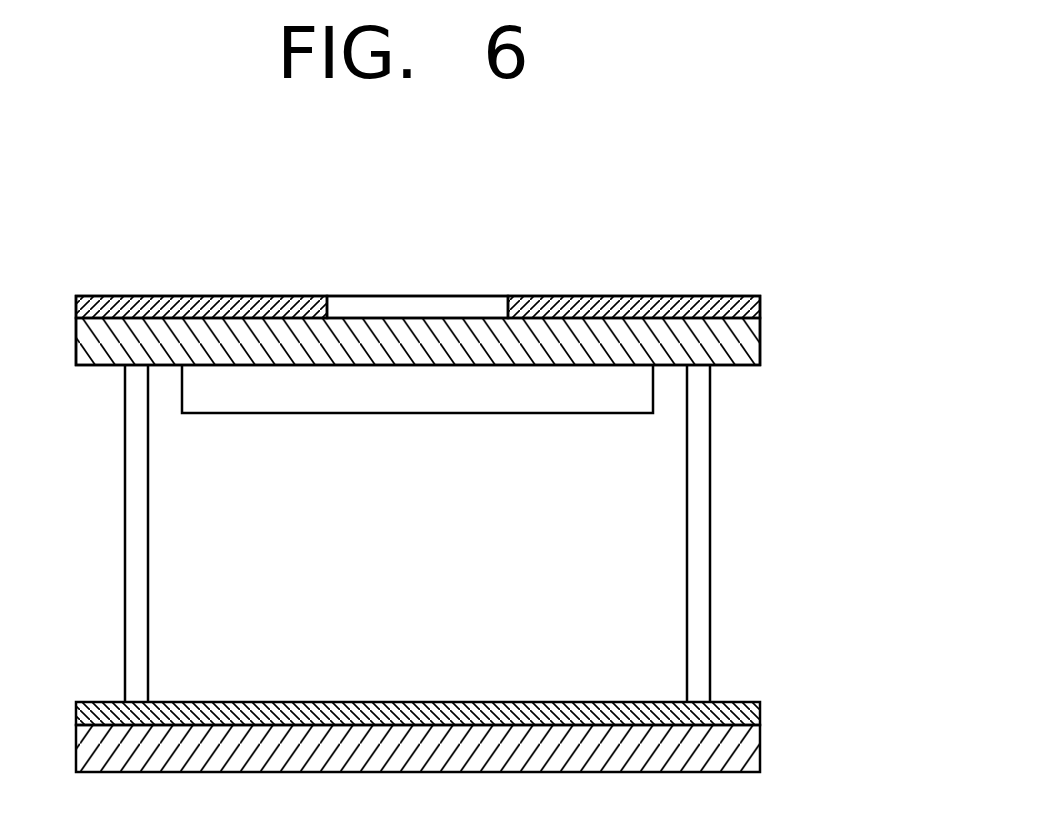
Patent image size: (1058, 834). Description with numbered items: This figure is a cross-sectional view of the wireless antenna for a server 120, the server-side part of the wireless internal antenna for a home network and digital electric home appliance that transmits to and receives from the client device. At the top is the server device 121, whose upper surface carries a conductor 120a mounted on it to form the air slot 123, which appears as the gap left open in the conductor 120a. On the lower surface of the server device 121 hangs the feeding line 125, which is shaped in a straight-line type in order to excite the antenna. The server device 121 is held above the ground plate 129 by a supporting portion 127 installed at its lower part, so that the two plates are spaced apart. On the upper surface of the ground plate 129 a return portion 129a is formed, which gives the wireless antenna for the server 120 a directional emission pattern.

The wireless antenna for a server 120 is at (513, 280).
The conductor 120a is at (592, 300).
The server device 121 is at (727, 340).
The air slot 123 is at (412, 308).
The feeding line 125 is at (640, 398).
The supporting portion 127 is at (700, 602).
The ground plate 129 is at (509, 734).
The return portion 129a is at (715, 712).